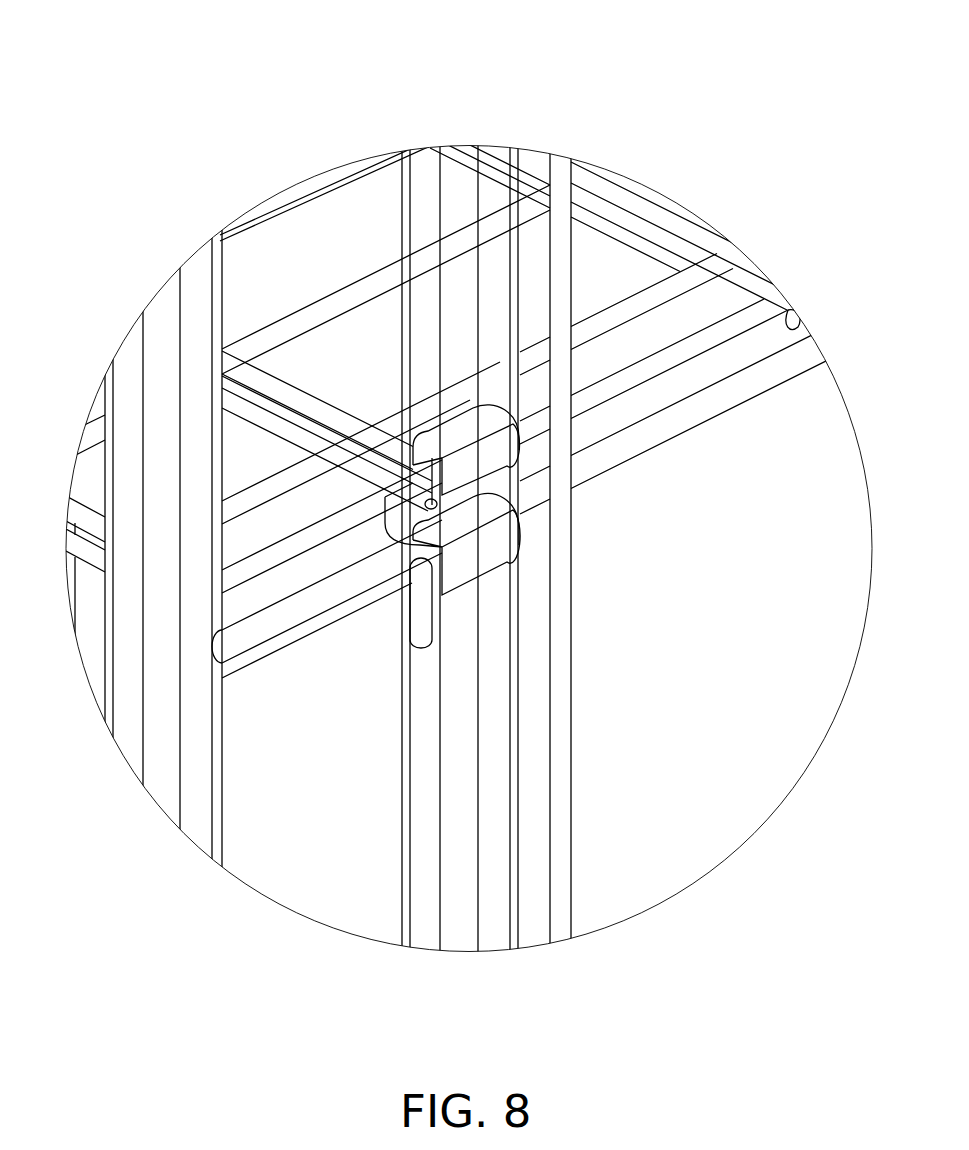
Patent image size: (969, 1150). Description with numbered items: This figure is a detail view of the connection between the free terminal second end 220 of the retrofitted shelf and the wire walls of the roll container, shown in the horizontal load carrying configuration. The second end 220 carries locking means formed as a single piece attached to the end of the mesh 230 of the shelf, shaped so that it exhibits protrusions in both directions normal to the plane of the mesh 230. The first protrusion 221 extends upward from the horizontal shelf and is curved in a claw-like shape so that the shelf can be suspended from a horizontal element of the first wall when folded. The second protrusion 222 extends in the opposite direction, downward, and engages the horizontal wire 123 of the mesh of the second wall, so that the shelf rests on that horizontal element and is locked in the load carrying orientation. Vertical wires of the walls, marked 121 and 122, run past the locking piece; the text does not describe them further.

The first vertical post 121 is at (157, 333).
The second vertical post 122 is at (560, 165).
The horizontal wire 123 is at (810, 357).
The second end 220 is at (572, 376).
The first protrusion 221 is at (463, 425).
The second protrusion 222 is at (497, 568).
The mesh 230 is at (305, 395).